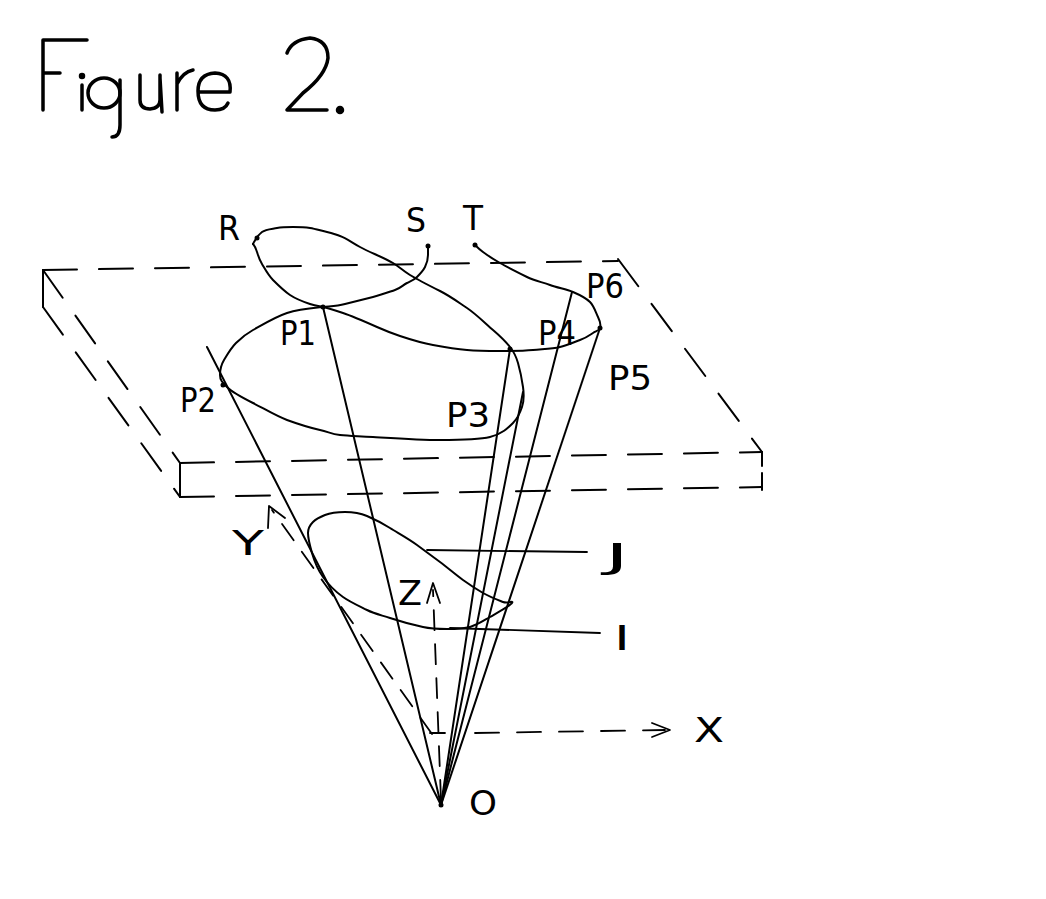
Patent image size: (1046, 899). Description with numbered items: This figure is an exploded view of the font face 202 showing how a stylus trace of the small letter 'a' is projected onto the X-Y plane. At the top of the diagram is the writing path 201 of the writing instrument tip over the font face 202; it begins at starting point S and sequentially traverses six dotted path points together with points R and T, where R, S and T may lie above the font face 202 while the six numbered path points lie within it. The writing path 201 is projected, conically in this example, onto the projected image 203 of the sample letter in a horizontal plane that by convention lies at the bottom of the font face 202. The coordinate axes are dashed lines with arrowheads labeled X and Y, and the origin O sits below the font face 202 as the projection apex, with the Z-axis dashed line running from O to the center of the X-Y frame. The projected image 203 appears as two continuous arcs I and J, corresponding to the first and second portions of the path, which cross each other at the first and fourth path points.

The writing path 201 is at (497, 252).
The font face 202 is at (697, 325).
The projected image 203 is at (523, 597).